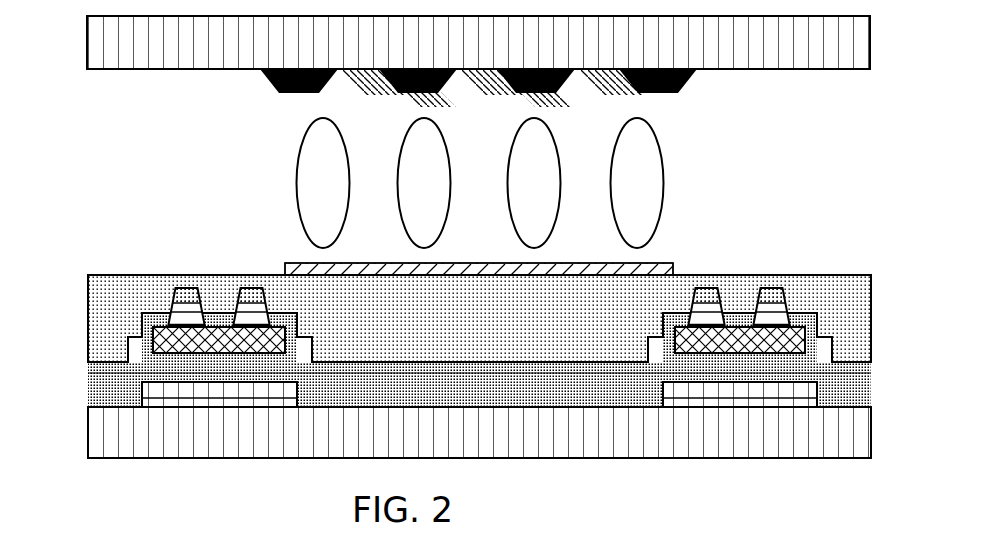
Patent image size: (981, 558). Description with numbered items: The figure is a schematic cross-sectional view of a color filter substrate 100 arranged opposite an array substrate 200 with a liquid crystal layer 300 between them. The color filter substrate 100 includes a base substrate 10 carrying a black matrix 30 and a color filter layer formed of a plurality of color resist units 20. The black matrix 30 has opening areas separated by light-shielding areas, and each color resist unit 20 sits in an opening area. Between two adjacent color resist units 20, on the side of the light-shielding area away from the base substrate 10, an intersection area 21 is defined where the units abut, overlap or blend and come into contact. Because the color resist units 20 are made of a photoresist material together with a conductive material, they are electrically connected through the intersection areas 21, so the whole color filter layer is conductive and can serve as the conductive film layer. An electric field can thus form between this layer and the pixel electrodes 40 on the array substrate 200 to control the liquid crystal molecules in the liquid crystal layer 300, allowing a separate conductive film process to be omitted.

The base substrate 10 is at (870, 42).
The color resist unit 20 is at (618, 85).
The intersection area 21 is at (401, 100).
The black matrix 30 is at (683, 86).
The pixel electrode 40 is at (673, 268).
The color filter substrate 100 is at (75, 17).
The array substrate 200 is at (75, 275).
The liquid crystal layer 300 is at (75, 120).